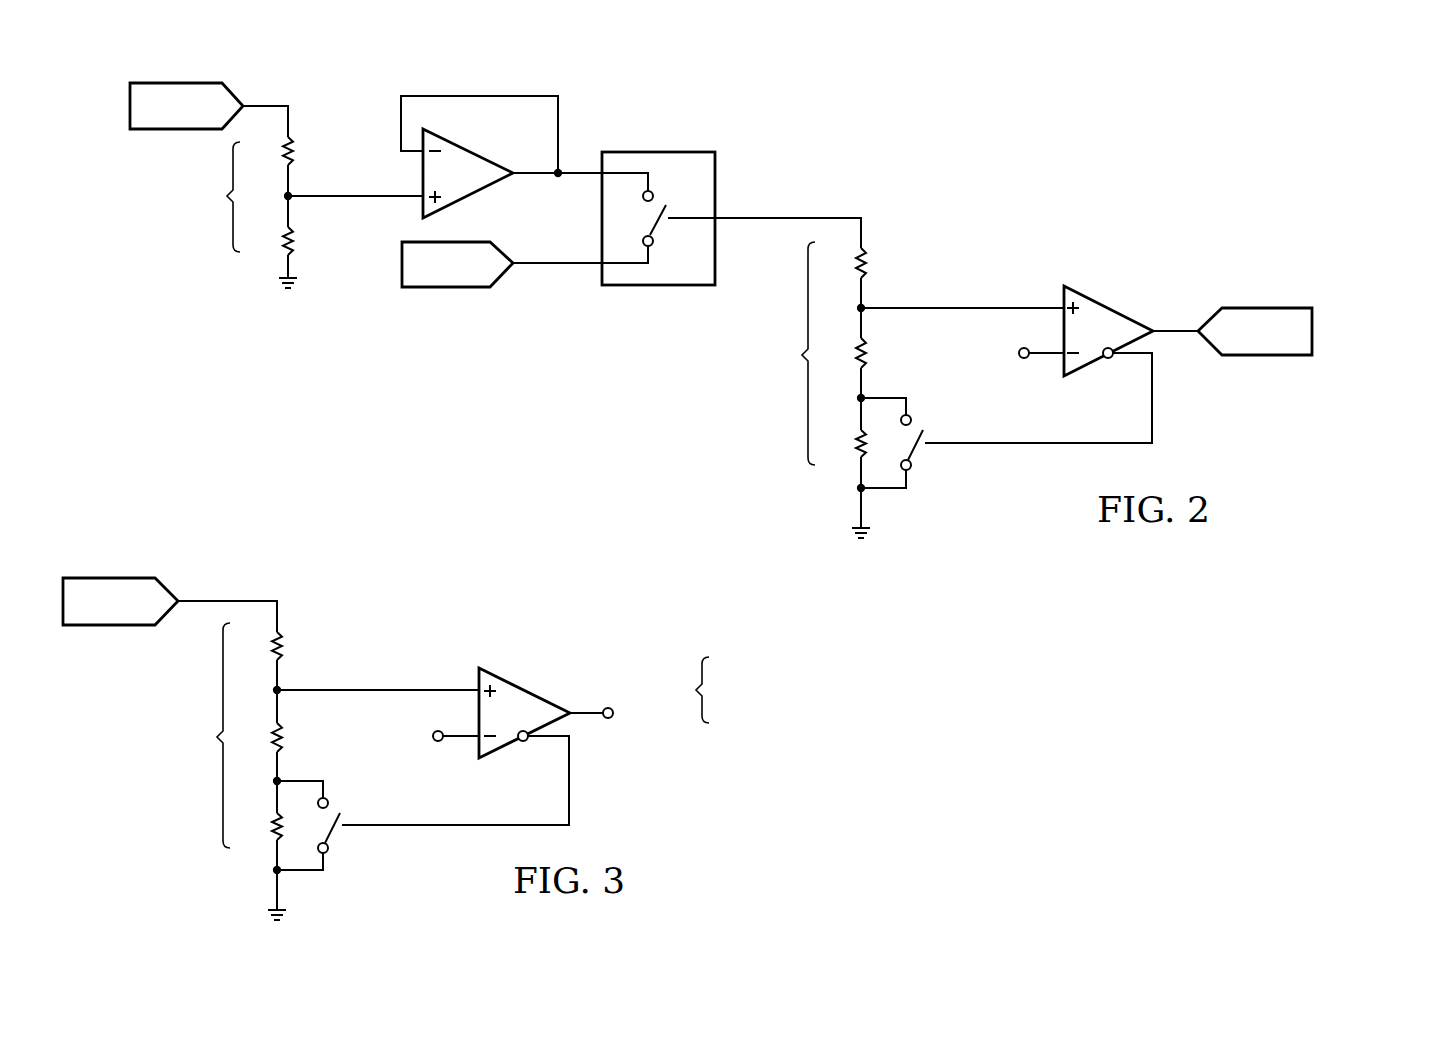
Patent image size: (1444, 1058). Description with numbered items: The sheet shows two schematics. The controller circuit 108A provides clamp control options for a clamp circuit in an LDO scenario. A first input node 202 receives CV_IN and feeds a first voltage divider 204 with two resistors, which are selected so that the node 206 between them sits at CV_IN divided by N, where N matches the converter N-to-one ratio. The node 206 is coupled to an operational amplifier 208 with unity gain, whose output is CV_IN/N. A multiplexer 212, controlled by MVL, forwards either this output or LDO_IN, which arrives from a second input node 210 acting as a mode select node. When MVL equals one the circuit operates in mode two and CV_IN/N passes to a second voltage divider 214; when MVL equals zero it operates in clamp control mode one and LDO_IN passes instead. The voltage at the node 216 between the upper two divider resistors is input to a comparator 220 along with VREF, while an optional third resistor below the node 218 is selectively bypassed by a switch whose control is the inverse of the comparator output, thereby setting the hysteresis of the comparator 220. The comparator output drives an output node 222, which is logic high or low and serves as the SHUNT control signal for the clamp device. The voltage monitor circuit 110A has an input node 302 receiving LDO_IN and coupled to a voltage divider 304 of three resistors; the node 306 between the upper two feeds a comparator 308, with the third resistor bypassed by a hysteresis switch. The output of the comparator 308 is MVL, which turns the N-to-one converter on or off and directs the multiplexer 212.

In FIG. 2, the controller circuit 108A is at (954, 138).
In FIG. 2, the first input node 202 is at (130, 95).
In FIG. 2, the first voltage divider 204 is at (240, 233).
In FIG. 2, the node 206 is at (290, 199).
In FIG. 2, the operational amplifier 208 is at (490, 130).
In FIG. 2, the second input node 210 is at (445, 288).
In FIG. 2, the multiplexer 212 is at (715, 185).
In FIG. 2, the second voltage divider 214 is at (814, 410).
In FIG. 2, the node 216 is at (866, 301).
In FIG. 2, the hysteresis node with switch S1 218 is at (866, 392).
In FIG. 2, the comparator 220 is at (1110, 306).
In FIG. 2, the output node 222 is at (1267, 308).
In FIG. 3, the voltage monitor circuit 110A is at (393, 588).
In FIG. 3, the input node 302 is at (108, 578).
In FIG. 3, the voltage divider 304 is at (366, 792).
In FIG. 3, the node 306 is at (282, 683).
In FIG. 3, the comparator 308 is at (525, 690).